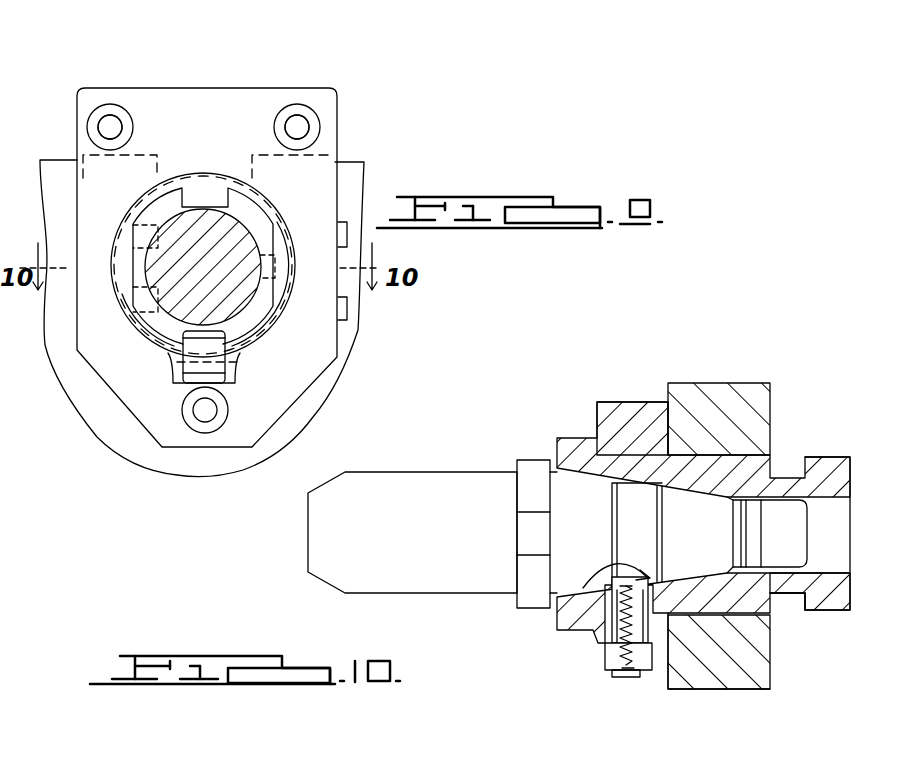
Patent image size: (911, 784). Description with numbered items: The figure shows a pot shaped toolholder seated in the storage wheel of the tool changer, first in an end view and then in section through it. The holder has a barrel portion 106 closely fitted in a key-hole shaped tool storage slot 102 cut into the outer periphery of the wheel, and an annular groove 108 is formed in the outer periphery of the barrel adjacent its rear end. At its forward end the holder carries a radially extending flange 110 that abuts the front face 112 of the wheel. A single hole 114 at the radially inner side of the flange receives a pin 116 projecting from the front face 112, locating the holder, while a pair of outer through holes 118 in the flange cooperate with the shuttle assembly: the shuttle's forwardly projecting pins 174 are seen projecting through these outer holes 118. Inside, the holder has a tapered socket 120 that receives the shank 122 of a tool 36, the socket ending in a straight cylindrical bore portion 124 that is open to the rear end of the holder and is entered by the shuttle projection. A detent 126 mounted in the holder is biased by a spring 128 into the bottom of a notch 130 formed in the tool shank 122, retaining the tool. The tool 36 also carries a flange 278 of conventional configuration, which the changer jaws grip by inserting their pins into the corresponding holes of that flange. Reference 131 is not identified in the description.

In FIG. 10, the tool 36 is at (436, 487).
In FIG. 9, the tool storage slot 102 is at (140, 345).
In FIG. 10, the barrel portion 106 is at (763, 442).
In FIG. 10, the annular groove 108 is at (792, 592).
In FIG. 10, the flange 110 is at (622, 416).
In FIG. 9, the front face 112 is at (350, 376).
In FIG. 10, the front face 112 is at (667, 678).
In FIG. 9, the hole 114 is at (223, 406).
In FIG. 9, the pin 116 is at (205, 413).
In FIG. 9, the outer through holes 118 is at (108, 106).
In FIG. 10, the tapered socket 120 is at (578, 478).
In FIG. 10, the shank 122 is at (703, 565).
In FIG. 10, the straight cylindrical bore portion 124 is at (836, 518).
In FIG. 10, the detent 126 is at (603, 640).
In FIG. 10, the spring 128 is at (628, 674).
In FIG. 10, the notch 130 is at (598, 580).
In FIG. 10, the step 131 is at (772, 665).
In FIG. 9, the forwardly projecting pins 174 is at (286, 127).
In FIG. 10, the tool flange 278 is at (532, 465).